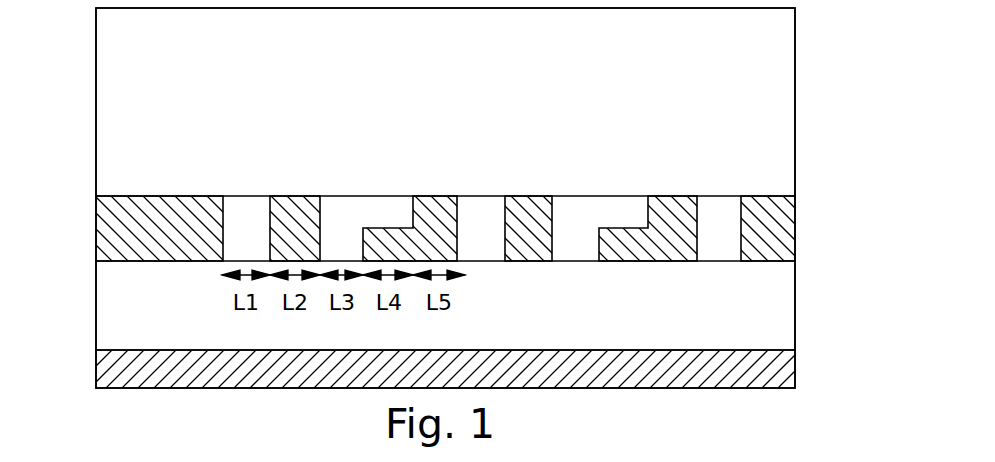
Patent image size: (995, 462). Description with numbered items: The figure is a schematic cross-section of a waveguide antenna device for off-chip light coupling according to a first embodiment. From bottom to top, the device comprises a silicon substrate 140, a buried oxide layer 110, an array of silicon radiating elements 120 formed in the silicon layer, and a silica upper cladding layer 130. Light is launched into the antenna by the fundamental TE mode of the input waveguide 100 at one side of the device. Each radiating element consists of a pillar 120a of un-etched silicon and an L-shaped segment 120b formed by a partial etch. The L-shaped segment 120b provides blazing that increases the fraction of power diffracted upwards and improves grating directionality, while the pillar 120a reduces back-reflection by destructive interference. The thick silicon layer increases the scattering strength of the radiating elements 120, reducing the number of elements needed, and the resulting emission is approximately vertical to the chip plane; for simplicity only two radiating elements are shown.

The input waveguide 100 is at (96, 231).
The buried oxide layer 110 is at (795, 305).
The array of silicon radiating elements 120 is at (358, 148).
The pillar 120a is at (297, 196).
The L-shaped segment 120b is at (435, 196).
The silica upper cladding layer 130 is at (795, 68).
The silicon substrate 140 is at (96, 370).